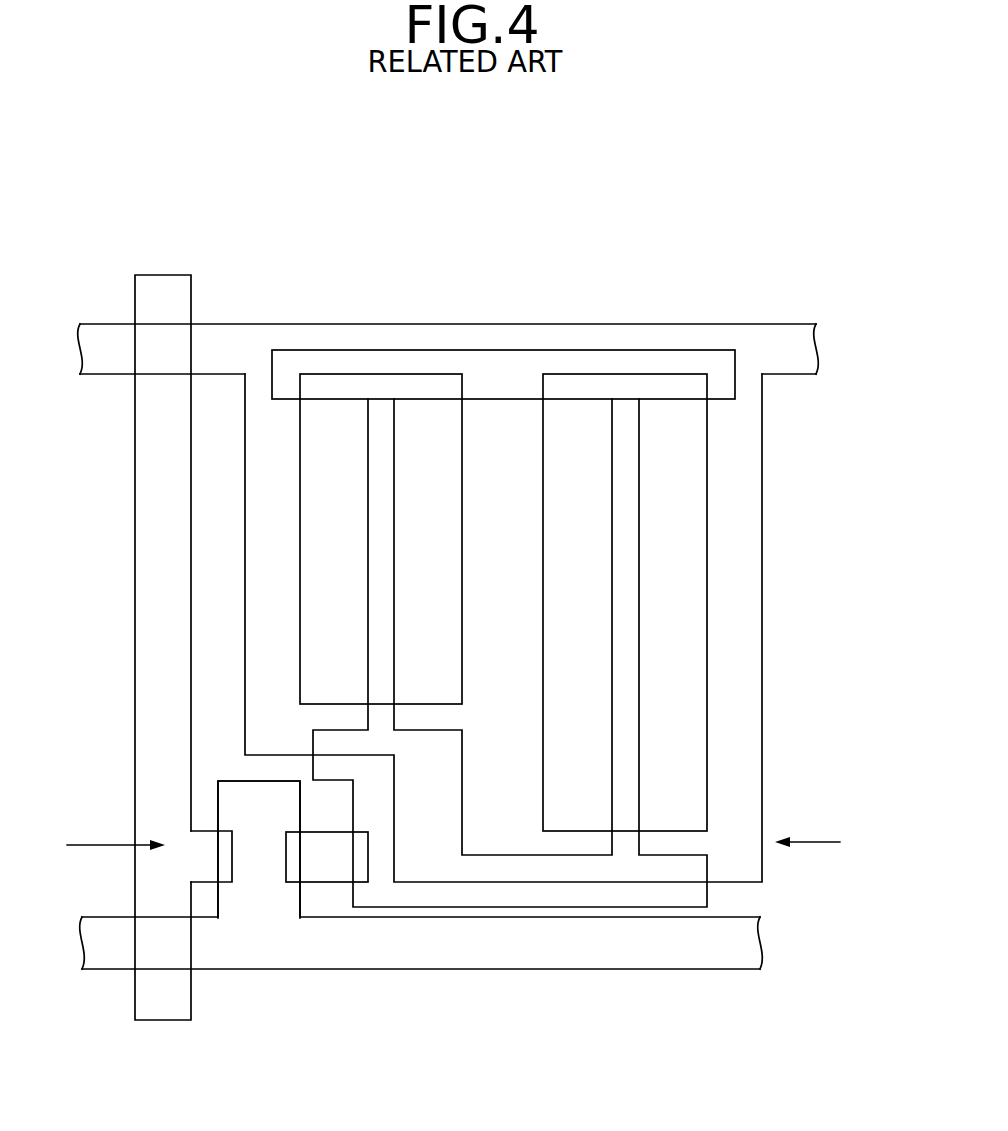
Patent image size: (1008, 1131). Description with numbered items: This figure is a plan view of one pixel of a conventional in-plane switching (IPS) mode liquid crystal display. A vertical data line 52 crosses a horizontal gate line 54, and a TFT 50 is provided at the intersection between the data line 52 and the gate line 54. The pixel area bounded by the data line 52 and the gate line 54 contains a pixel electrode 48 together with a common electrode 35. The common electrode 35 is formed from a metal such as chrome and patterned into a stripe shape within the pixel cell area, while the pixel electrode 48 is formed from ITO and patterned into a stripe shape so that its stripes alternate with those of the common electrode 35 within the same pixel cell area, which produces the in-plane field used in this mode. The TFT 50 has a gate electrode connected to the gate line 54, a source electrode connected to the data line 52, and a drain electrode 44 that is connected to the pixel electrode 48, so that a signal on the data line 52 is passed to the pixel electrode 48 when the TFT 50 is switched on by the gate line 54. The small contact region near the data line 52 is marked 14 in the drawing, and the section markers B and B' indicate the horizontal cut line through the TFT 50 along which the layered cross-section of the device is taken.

The source electrode 14 is at (217, 867).
The common electrode 35 is at (755, 530).
The drain electrode 44 is at (332, 877).
The pixel electrode 48 is at (639, 627).
The TFT 50 is at (220, 767).
The data line 52 is at (167, 1013).
The gate line 54 is at (753, 946).
The section line B is at (104, 845).
The section line B' is at (829, 843).